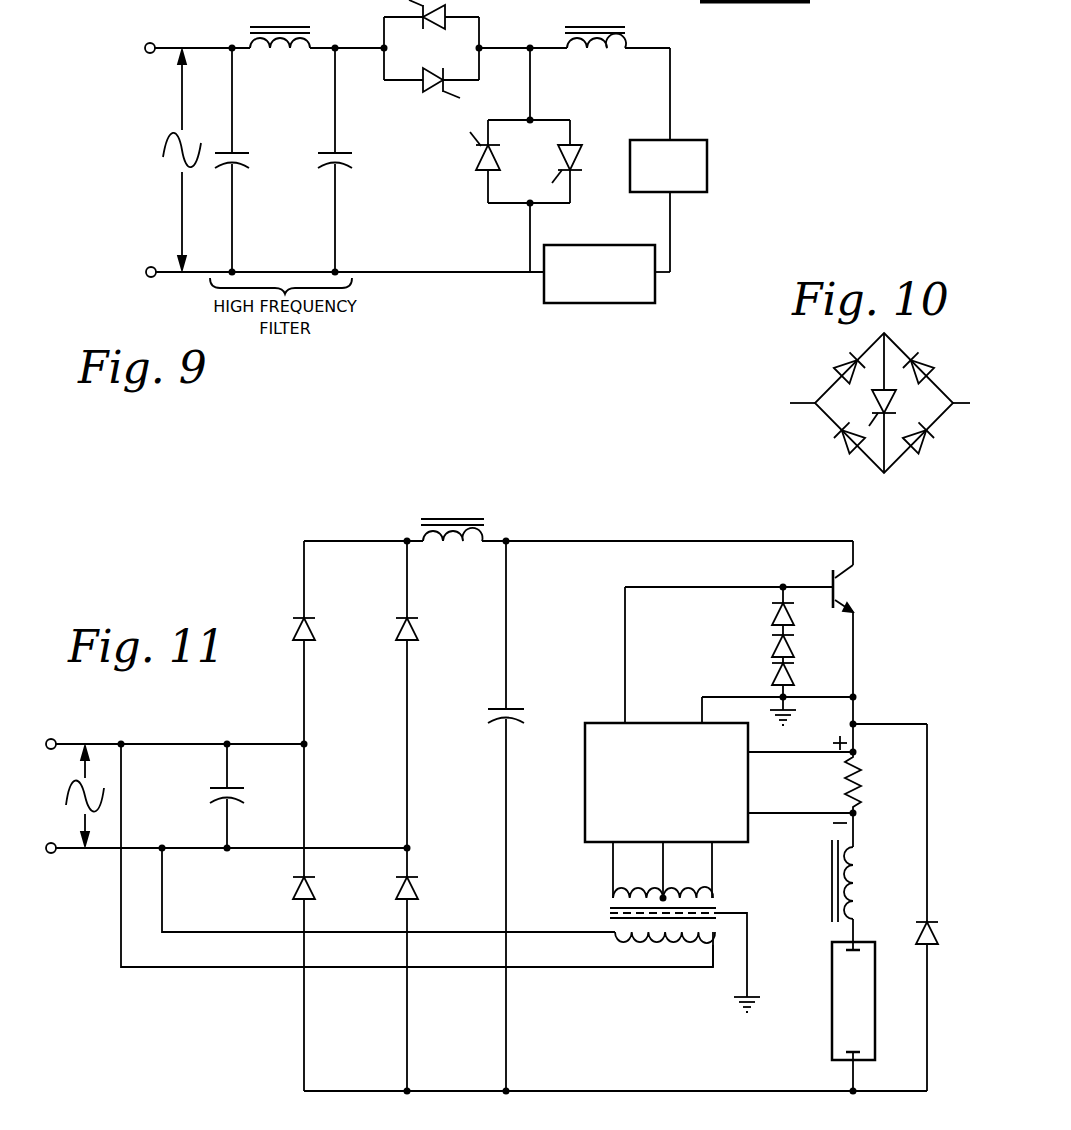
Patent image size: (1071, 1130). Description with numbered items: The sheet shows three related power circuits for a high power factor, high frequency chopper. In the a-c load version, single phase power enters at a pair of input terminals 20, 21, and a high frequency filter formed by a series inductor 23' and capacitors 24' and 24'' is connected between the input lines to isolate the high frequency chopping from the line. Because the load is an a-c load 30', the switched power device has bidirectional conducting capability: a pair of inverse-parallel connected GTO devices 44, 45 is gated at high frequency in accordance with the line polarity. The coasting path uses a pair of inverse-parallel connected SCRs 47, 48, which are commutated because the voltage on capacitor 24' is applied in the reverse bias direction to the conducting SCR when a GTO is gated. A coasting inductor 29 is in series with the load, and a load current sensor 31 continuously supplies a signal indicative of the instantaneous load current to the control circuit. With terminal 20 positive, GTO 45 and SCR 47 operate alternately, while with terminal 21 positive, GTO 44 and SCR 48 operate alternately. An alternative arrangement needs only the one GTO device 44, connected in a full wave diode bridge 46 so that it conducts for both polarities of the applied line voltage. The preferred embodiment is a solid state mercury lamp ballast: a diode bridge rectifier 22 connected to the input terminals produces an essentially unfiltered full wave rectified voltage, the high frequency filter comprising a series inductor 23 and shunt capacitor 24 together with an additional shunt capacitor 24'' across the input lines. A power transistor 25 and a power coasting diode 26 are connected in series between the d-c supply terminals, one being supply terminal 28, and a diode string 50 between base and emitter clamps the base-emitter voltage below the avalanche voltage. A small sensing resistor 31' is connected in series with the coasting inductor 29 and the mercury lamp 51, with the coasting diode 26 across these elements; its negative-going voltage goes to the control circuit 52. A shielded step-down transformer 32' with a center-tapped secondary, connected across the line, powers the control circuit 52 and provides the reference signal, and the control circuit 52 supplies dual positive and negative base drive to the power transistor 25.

In FIG. 9, the input terminal 20 is at (155, 43).
In FIG. 11, the input terminal 20 is at (57, 740).
In FIG. 9, the input terminal 21 is at (146, 279).
In FIG. 11, the input terminal 21 is at (56, 854).
In FIG. 11, the diode bridge rectifier 22 is at (364, 803).
In FIG. 11, the series inductor 23 is at (442, 515).
In FIG. 9, the series inductor 23' is at (277, 26).
In FIG. 11, the shunt capacitor 24 is at (520, 816).
In FIG. 9, the capacitor 24' is at (349, 160).
In FIG. 9, the shunt capacitor 24'' is at (247, 160).
In FIG. 11, the shunt capacitor 24'' is at (199, 796).
In FIG. 11, the power transistor 25 is at (852, 583).
In FIG. 11, the power coasting diode 26 is at (921, 918).
In FIG. 11, the d-c supply terminal 28 is at (592, 1091).
In FIG. 9, the coasting inductor 29 is at (637, 42).
In FIG. 11, the coasting inductor 29 is at (862, 857).
In FIG. 9, the a-c load 30' is at (702, 160).
In FIG. 9, the load current sensor 31 is at (599, 293).
In FIG. 11, the sensing resistor 31' is at (874, 782).
In FIG. 11, the step-down transformer 32' is at (661, 927).
In FIG. 9, the GTO device 44 is at (428, 30).
In FIG. 10, the GTO device 44 is at (877, 412).
In FIG. 9, the GTO device 45 is at (436, 93).
In FIG. 10, the full wave diode bridge 46 is at (830, 392).
In FIG. 9, the SCR 47 is at (484, 174).
In FIG. 9, the SCR 48 is at (575, 143).
In FIG. 11, the diode string 50 is at (773, 645).
In FIG. 11, the mercury lamp 51 is at (832, 995).
In FIG. 11, the control circuit 52 is at (666, 722).